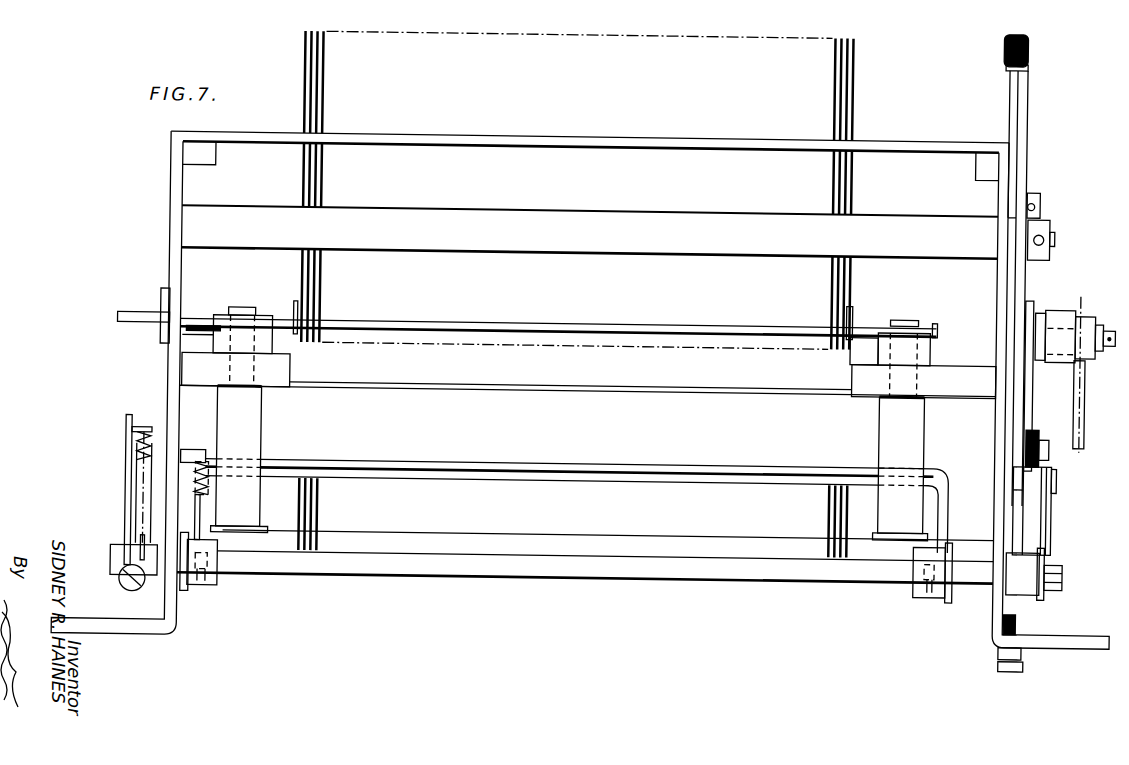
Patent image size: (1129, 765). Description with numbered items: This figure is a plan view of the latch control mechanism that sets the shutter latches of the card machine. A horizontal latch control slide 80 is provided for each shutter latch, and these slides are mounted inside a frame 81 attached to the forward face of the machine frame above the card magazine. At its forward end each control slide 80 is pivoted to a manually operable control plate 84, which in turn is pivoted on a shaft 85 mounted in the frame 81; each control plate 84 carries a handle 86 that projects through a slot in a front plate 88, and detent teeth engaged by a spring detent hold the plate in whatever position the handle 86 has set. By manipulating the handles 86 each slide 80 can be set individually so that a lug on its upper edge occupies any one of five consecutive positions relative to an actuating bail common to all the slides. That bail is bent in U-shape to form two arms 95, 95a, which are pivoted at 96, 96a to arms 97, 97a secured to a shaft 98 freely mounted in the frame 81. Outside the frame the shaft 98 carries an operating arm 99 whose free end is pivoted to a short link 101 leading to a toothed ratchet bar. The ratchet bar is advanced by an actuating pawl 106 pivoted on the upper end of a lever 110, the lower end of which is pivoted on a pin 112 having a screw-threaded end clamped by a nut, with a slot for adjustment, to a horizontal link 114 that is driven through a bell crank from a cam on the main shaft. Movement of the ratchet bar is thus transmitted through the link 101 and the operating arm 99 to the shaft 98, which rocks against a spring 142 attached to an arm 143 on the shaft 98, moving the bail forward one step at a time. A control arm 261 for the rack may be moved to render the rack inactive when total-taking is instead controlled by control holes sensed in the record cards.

The latch control slide 80 is at (313, 512).
The frame 81 is at (179, 224).
The control plate 84 is at (320, 187).
The shaft 85 is at (1050, 233).
The handle 86 is at (314, 110).
The front plate 88 is at (465, 132).
The arm of actuating bail 95 is at (209, 518).
The arm of actuating bail 95a is at (598, 506).
The pivot 96 is at (240, 582).
The pivot 96a is at (923, 576).
The arm 97 is at (193, 590).
The arm 97a is at (951, 595).
The shaft 98 is at (450, 571).
The operating arm 99 is at (1045, 590).
The link 101 is at (1045, 532).
The actuating pawl 106 is at (1033, 378).
The lever 110 is at (1060, 310).
The pin 112 is at (1106, 323).
The horizontal link 114 is at (1080, 412).
The spring 142 is at (141, 456).
The arm 143 is at (130, 528).
The control arm 261 is at (1016, 135).